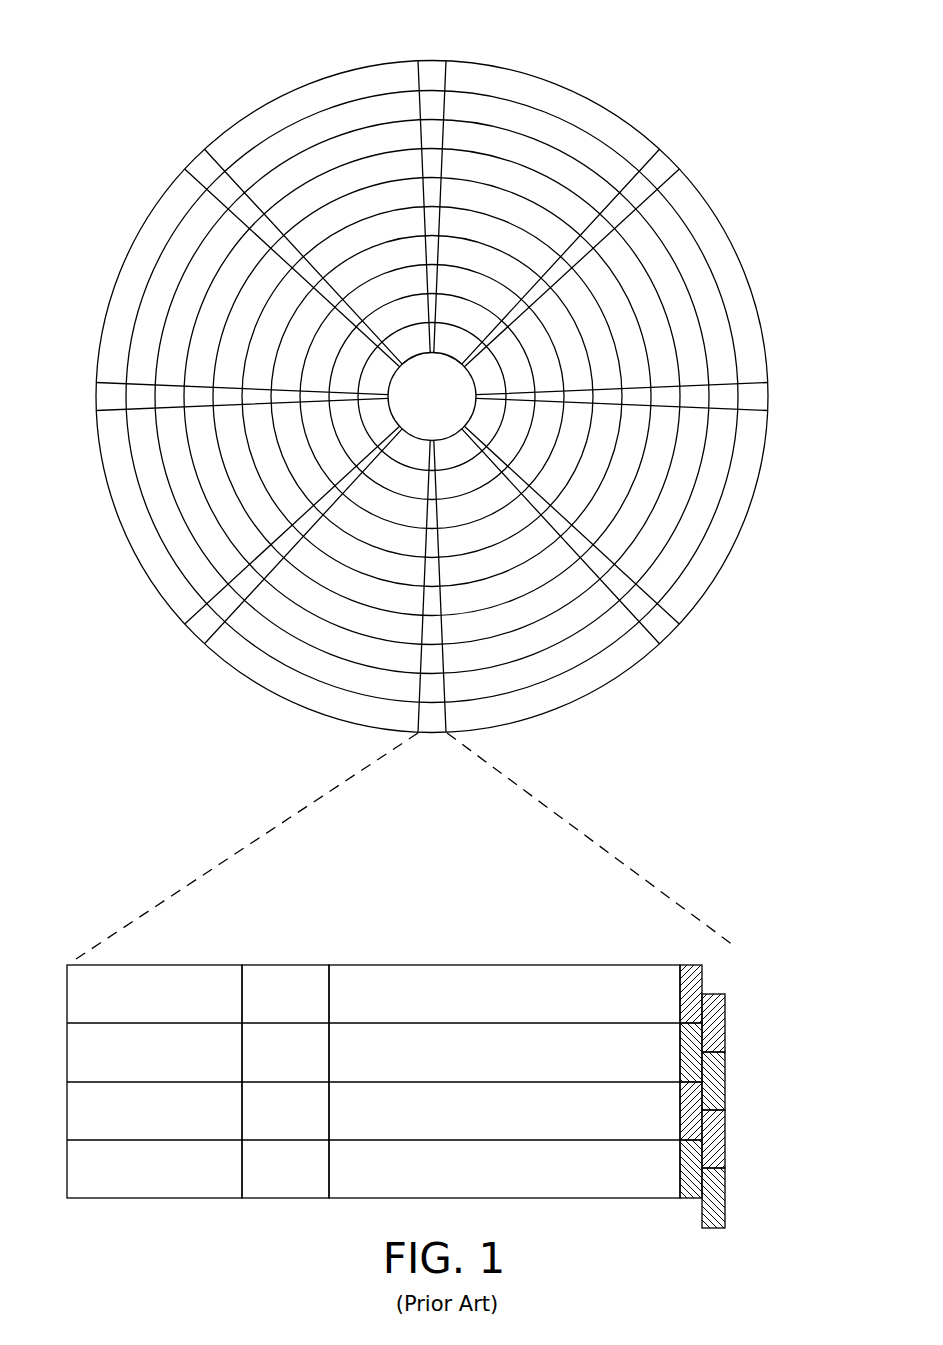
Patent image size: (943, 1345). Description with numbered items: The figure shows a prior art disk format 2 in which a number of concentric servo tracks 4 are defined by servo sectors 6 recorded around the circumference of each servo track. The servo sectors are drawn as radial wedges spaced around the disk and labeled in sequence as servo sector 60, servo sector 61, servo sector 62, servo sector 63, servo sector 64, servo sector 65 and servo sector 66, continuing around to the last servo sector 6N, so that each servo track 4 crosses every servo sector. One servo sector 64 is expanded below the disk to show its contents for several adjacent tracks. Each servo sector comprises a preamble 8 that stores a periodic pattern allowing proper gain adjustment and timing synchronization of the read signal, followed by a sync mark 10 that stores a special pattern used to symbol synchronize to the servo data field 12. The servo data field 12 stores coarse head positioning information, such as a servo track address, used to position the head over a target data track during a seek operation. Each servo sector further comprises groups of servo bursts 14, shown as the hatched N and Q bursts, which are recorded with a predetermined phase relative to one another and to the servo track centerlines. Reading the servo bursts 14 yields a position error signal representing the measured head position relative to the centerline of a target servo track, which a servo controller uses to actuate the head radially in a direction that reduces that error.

The disk format 2 is at (182, 62).
The servo track 4 is at (548, 127).
The servo sector 6 is at (433, 408).
The servo sector 60 is at (433, 70).
The servo sector 61 is at (662, 165).
The servo sector 62 is at (758, 397).
The servo sector 63 is at (660, 627).
The servo sector 64 is at (282, 807).
The servo sector 65 is at (200, 627).
The servo sector 66 is at (102, 395).
The servo sector 6N is at (202, 163).
The preamble 8 is at (165, 965).
The sync mark 10 is at (285, 965).
The servo data field 12 is at (490, 965).
The servo bursts 14 is at (724, 962).